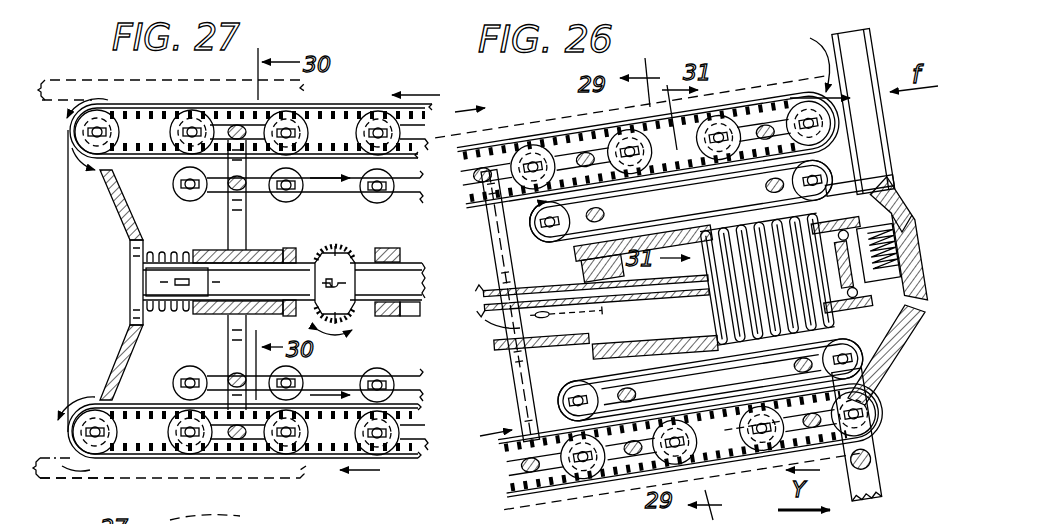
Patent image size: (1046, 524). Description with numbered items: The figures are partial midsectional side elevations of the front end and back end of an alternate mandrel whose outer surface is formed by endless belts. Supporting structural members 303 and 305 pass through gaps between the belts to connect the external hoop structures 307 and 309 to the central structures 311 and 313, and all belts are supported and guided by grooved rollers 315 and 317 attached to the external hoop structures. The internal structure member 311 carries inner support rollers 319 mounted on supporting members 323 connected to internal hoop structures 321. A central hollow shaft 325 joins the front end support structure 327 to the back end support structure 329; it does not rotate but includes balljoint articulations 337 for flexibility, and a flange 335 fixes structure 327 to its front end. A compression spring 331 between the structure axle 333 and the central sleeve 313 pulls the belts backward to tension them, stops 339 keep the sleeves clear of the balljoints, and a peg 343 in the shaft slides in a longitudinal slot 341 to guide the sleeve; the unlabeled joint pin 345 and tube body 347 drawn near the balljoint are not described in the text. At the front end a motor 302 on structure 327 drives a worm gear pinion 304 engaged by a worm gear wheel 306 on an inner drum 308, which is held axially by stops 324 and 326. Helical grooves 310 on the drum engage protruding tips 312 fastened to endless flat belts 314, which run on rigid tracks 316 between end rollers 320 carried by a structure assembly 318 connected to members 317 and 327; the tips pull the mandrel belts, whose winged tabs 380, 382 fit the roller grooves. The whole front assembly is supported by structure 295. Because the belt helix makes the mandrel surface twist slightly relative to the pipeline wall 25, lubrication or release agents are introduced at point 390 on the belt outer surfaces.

In FIG. 27, the pipeline wall 25 is at (100, 480).
In FIG. 26, the structure 295 is at (875, 498).
In FIG. 26, the motor 302 is at (870, 42).
In FIG. 27, the supporting structural member 303 is at (225, 108).
In FIG. 26, the worm gear pinion 304 is at (812, 278).
In FIG. 26, the supporting structural member 305 is at (575, 140).
In FIG. 26, the worm gear wheel 306 is at (900, 205).
In FIG. 26, the external hoop structure 307 is at (598, 135).
In FIG. 26, the inner drum 308 is at (606, 345).
In FIG. 27, the external hoop structure 309 is at (238, 125).
In FIG. 26, the helical grooves 310 is at (700, 296).
In FIG. 27, the central structure 311 is at (246, 240).
In FIG. 26, the protruding tips 312 is at (568, 385).
In FIG. 27, the central sleeve 313 is at (390, 250).
In FIG. 26, the central sleeve 313 is at (500, 256).
In FIG. 26, the endless flat belts 314 is at (518, 410).
In FIG. 27, the grooved roller 315 is at (80, 140).
In FIG. 26, the grooved roller 315 is at (810, 112).
In FIG. 26, the rigid tracks 316 is at (598, 158).
In FIG. 27, the grooved roller 317 is at (222, 455).
In FIG. 26, the grooved roller 317 is at (753, 459).
In FIG. 26, the structure assembly 318 is at (632, 404).
In FIG. 27, the inner support rollers 319 is at (185, 198).
In FIG. 26, the end rollers 320 is at (866, 132).
In FIG. 27, the internal hoop structure 321 is at (230, 376).
In FIG. 26, the internal hoop structure 321 is at (612, 445).
In FIG. 27, the supporting member 323 is at (285, 365).
In FIG. 26, the stop 324 is at (548, 250).
In FIG. 27, the central hollow shaft 325 is at (405, 272).
In FIG. 26, the central hollow shaft 325 is at (505, 332).
In FIG. 26, the stop 326 is at (886, 180).
In FIG. 26, the front end support structure 327 is at (878, 400).
In FIG. 27, the back end support structure 329 is at (110, 350).
In FIG. 27, the compression spring 331 is at (165, 254).
In FIG. 27, the structure axle 333 is at (138, 278).
In FIG. 26, the flange 335 is at (914, 210).
In FIG. 27, the balljoint articulation 337 is at (338, 250).
In FIG. 27, the stop 339 is at (392, 316).
In FIG. 26, the longitudinal slot 341 is at (581, 316).
In FIG. 26, the peg 343 is at (548, 312).
In FIG. 27, the joint pin 345 is at (345, 285).
In FIG. 27, the tube body 347 is at (229, 281).
In FIG. 27, the tab wing 380 is at (130, 110).
In FIG. 27, the tab wing 382 is at (142, 448).
In FIG. 26, the lubrication point 390 is at (803, 59).